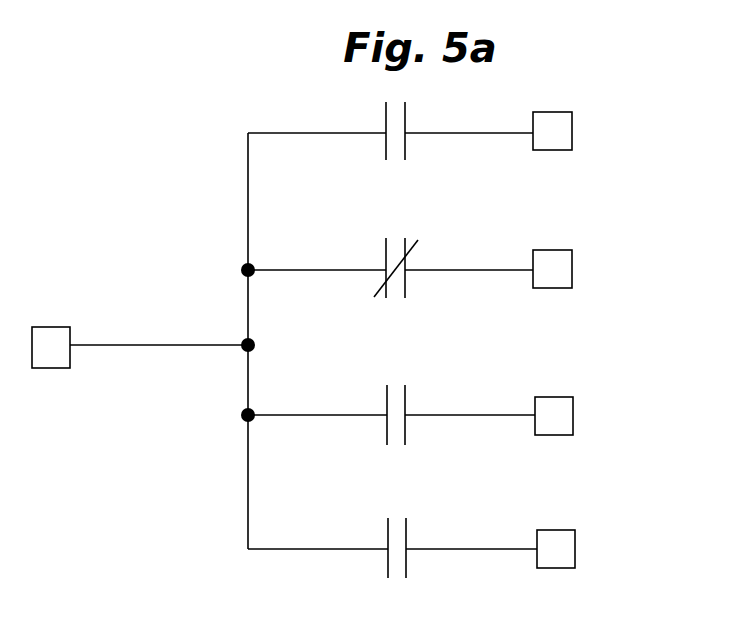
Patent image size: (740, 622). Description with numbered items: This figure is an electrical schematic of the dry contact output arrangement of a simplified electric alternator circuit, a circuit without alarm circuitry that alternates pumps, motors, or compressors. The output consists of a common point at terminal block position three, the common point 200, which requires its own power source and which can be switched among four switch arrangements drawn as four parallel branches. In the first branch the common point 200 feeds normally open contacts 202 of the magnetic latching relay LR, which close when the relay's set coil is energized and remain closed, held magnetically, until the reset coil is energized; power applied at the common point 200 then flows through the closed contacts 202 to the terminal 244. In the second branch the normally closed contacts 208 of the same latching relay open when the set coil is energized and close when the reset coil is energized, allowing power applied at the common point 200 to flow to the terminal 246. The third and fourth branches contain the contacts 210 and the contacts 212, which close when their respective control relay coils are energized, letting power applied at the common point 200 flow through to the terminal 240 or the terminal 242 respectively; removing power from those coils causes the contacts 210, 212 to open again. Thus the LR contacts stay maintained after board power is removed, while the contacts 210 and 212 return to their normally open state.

The common point at terminal block position 3 200 is at (57, 327).
The normally open contacts 202 is at (405, 133).
The normally closed contacts 208 is at (405, 270).
The contacts CR1A 210 is at (405, 415).
The contacts CR2A 212 is at (406, 549).
The terminal 244 is at (572, 143).
The terminal 246 is at (572, 253).
The terminal 240 is at (573, 415).
The terminal 242 is at (565, 568).